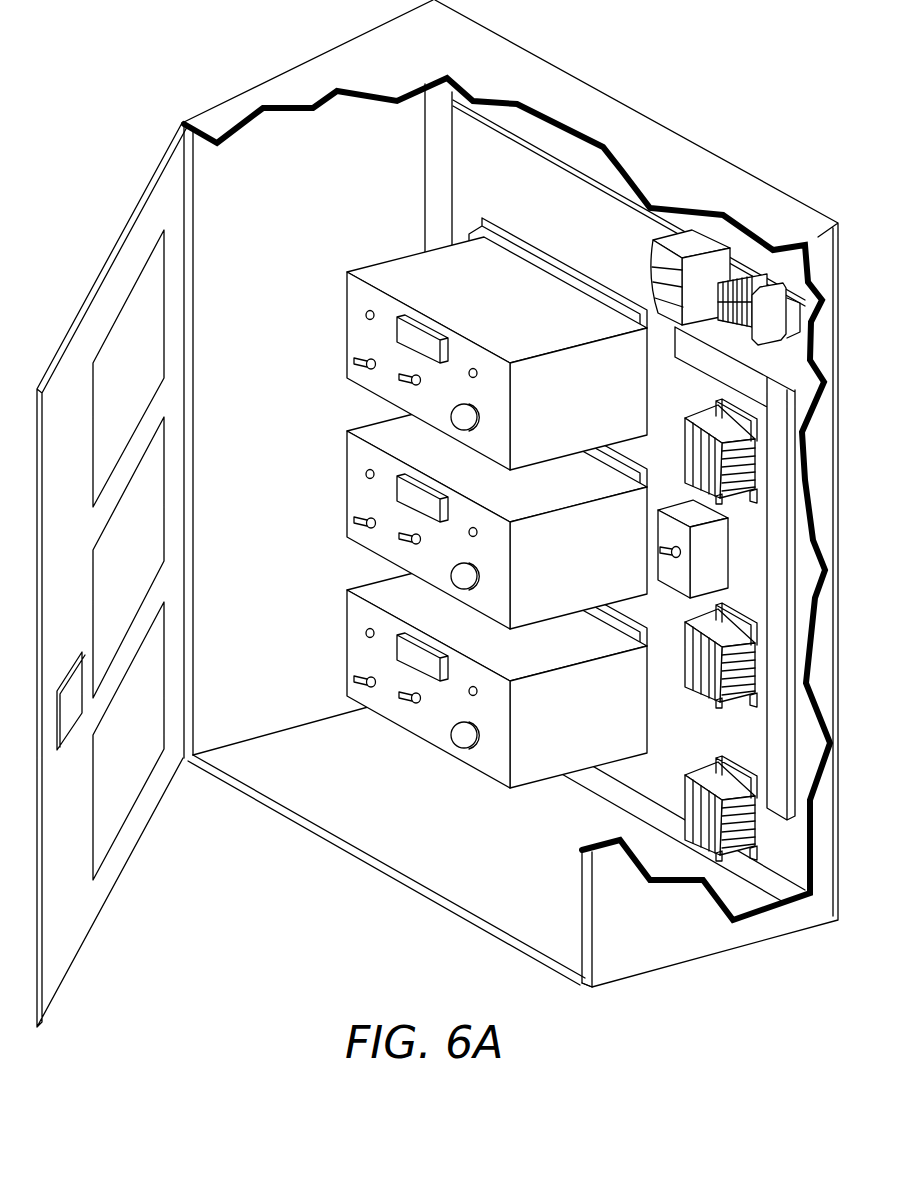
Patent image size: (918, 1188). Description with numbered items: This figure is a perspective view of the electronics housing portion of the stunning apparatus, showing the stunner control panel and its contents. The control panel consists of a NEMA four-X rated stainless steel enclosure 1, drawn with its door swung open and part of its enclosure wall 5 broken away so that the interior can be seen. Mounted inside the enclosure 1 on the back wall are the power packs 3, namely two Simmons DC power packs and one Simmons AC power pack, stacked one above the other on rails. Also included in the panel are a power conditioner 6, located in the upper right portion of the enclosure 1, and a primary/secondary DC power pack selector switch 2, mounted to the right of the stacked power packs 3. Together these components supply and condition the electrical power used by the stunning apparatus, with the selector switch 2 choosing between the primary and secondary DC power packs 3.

The enclosure 1 is at (463, 162).
The switch module 2 is at (658, 550).
The control unit 3 is at (449, 503).
The insulating liner 5 is at (293, 157).
The power supply 6 is at (658, 277).